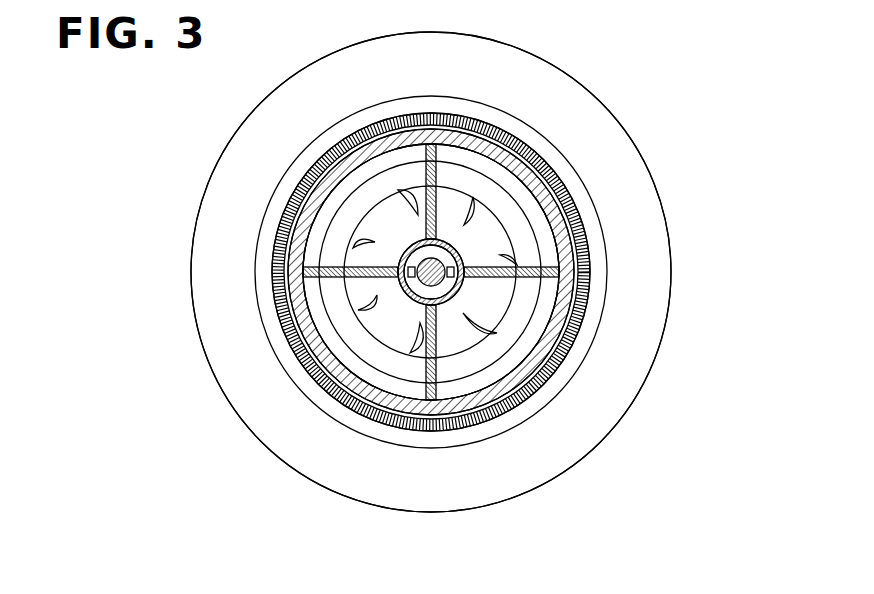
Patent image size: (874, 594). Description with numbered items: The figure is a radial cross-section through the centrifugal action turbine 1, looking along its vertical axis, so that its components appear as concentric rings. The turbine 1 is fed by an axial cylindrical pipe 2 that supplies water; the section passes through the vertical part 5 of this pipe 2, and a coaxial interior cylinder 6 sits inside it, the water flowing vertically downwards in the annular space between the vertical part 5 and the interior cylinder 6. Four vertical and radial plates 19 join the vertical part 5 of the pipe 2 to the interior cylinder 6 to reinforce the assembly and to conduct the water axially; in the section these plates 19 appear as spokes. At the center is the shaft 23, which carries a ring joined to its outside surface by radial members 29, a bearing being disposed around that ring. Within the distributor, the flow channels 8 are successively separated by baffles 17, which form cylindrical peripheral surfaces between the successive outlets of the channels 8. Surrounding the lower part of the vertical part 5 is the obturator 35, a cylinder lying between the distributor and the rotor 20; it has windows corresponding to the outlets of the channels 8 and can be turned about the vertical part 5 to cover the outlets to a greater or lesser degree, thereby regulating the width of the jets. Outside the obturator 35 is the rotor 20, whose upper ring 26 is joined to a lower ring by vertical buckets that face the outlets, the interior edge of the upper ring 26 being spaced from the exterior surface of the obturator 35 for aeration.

The centrifugal action turbine 1 is at (656, 146).
The axial cylindrical pipe 2 is at (310, 182).
The vertical part 5 is at (297, 242).
The interior cylinder 6 is at (464, 257).
The channels 8 is at (435, 271).
The baffles 17 is at (358, 307).
The vertical and radial plates 19 is at (558, 309).
The rotor 20 is at (604, 445).
The shaft 23 is at (458, 250).
The upper ring 26 is at (535, 452).
The radial members 29 is at (437, 252).
The obturator 35 is at (589, 292).